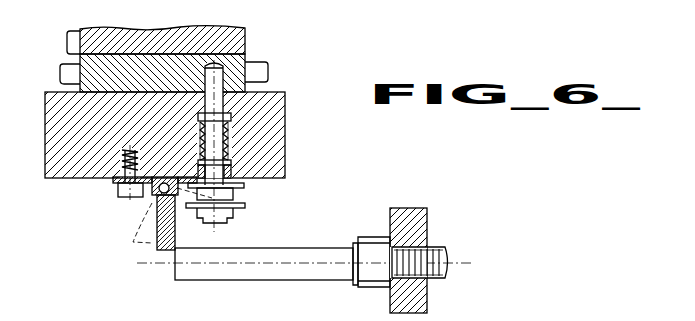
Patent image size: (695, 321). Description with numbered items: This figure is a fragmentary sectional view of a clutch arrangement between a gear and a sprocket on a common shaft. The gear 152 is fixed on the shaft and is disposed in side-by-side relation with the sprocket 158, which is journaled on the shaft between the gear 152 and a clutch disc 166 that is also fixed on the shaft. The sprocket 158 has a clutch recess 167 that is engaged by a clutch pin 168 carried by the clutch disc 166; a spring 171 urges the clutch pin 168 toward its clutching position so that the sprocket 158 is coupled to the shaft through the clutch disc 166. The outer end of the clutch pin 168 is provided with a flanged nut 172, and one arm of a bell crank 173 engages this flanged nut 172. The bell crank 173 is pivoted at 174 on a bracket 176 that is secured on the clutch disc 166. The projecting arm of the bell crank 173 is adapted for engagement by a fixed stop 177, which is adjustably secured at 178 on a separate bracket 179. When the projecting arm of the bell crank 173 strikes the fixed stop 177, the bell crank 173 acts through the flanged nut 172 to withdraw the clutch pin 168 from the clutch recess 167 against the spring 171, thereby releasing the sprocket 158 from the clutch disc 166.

The gear 152 is at (67, 43).
The sprocket 158 is at (60, 71).
The clutch disc 166 is at (48, 125).
The clutch recess 167 is at (222, 70).
The clutch pin 168 is at (222, 105).
The spring 171 is at (232, 142).
The flanged nut 172 is at (244, 185).
The bell crank 173 is at (157, 229).
The pivot 174 is at (158, 189).
The bracket 176 is at (115, 178).
The fixed stop 177 is at (312, 248).
The adjustable securing point 178 is at (430, 248).
The bracket 179 is at (415, 211).